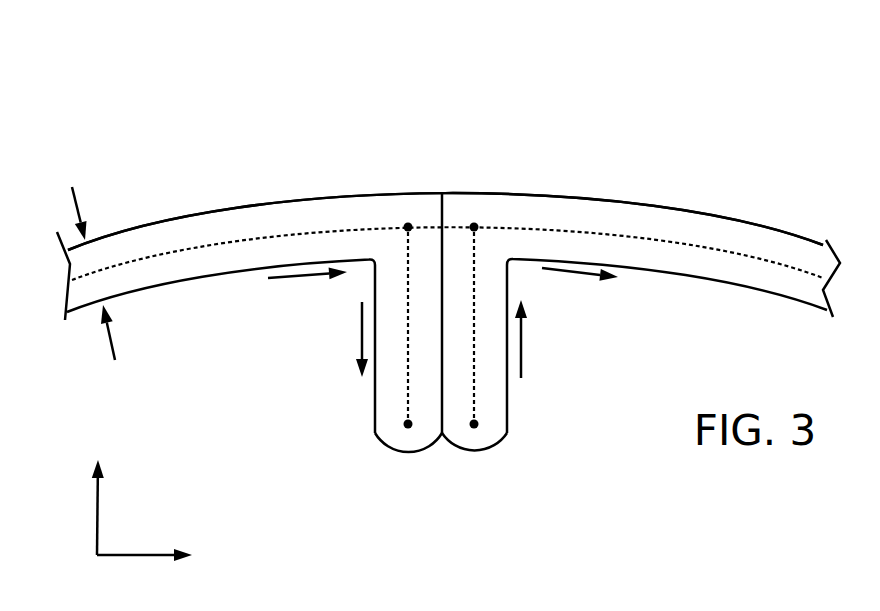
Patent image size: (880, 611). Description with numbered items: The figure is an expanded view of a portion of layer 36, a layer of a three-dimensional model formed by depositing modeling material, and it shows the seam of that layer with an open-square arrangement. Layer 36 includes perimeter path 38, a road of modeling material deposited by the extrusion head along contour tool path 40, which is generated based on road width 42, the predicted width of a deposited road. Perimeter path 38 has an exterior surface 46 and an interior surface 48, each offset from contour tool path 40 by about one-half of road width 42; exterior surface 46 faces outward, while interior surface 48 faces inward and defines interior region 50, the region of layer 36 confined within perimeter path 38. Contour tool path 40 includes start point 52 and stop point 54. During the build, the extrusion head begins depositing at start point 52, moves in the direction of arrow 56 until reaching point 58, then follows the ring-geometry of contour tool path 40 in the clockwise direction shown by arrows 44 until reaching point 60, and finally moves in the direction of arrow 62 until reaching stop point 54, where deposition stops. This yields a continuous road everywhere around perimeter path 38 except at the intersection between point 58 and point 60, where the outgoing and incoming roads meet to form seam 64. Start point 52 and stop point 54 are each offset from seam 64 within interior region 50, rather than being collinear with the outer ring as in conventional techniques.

The layer 36 is at (685, 63).
The perimeter path 38 is at (253, 188).
The contour tool path 40 is at (230, 241).
The road width 42 is at (117, 345).
The arrows 44 is at (303, 274).
The exterior surface 46 is at (165, 220).
The interior surface 48 is at (178, 285).
The interior region 50 is at (331, 549).
The start point 52 is at (478, 427).
The stop point 54 is at (405, 427).
The arrow 56 is at (522, 350).
The point 58 is at (474, 222).
The point 60 is at (408, 222).
The arrow 62 is at (362, 321).
The seam 64 is at (438, 178).